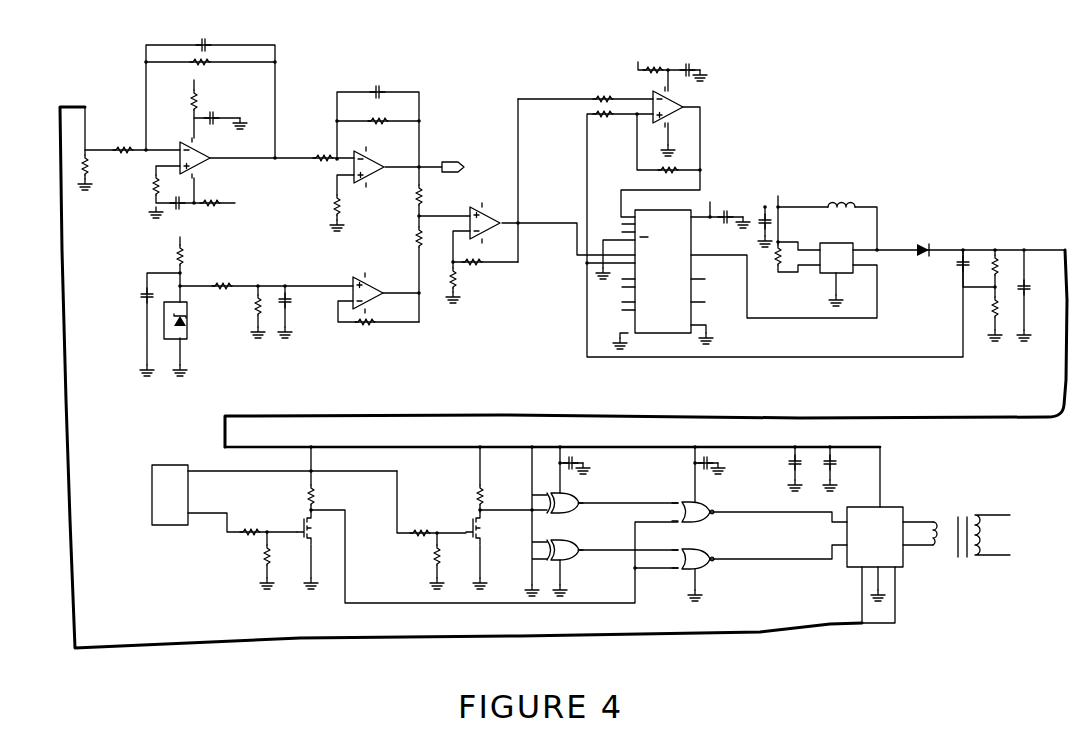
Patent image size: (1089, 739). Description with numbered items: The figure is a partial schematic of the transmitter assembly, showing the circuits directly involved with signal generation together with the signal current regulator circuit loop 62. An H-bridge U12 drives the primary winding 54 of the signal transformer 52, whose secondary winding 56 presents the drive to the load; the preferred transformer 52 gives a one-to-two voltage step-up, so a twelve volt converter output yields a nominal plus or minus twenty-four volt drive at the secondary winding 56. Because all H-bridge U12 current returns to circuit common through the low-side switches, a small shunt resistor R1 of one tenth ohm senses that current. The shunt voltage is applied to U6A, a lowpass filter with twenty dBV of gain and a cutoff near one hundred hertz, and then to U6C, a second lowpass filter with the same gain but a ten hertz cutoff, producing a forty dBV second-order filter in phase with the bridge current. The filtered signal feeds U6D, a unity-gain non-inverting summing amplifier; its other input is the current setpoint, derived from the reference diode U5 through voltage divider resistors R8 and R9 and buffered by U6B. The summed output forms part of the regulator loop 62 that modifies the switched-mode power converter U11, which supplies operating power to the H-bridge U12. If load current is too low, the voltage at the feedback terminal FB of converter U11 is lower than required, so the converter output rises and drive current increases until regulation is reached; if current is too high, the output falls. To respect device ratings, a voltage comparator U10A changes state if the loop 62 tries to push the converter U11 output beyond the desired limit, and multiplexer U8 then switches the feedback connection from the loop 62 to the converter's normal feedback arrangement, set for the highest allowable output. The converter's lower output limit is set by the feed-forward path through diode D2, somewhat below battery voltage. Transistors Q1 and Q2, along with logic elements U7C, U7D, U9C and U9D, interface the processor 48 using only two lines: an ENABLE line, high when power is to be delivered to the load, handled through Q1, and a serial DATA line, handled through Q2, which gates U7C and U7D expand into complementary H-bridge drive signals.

The shunt resistor R1 is at (75, 178).
The lowpass filter U6A is at (186, 148).
The lowpass filter U6C is at (357, 158).
The buffer U6B is at (372, 300).
The non-inverting summing amplifier U6D is at (478, 207).
The reference diode U5 is at (186, 318).
The voltage divider resistor R8 is at (222, 283).
The voltage divider resistor R9 is at (255, 305).
The voltage comparator U10A is at (690, 106).
The multiplexer U8 is at (674, 210).
The current regulation loop 62 is at (906, 209).
The switched-mode power converter U11 is at (828, 207).
The feedback terminal FB is at (855, 264).
The diode D2 is at (923, 245).
The processor 48 is at (150, 500).
The serial DATA line DATA is at (205, 471).
The ENABLE line ENABLE is at (200, 515).
The transistor Q1 is at (305, 540).
The transistor Q2 is at (472, 540).
The gate U7C is at (548, 497).
The gate U7D is at (572, 556).
The logic element U9C is at (688, 500).
The logic element U9D is at (707, 565).
The H-bridge U12 is at (892, 505).
The primary winding 54 is at (931, 550).
The transformer 52 is at (970, 565).
The secondary winding 56 is at (998, 555).